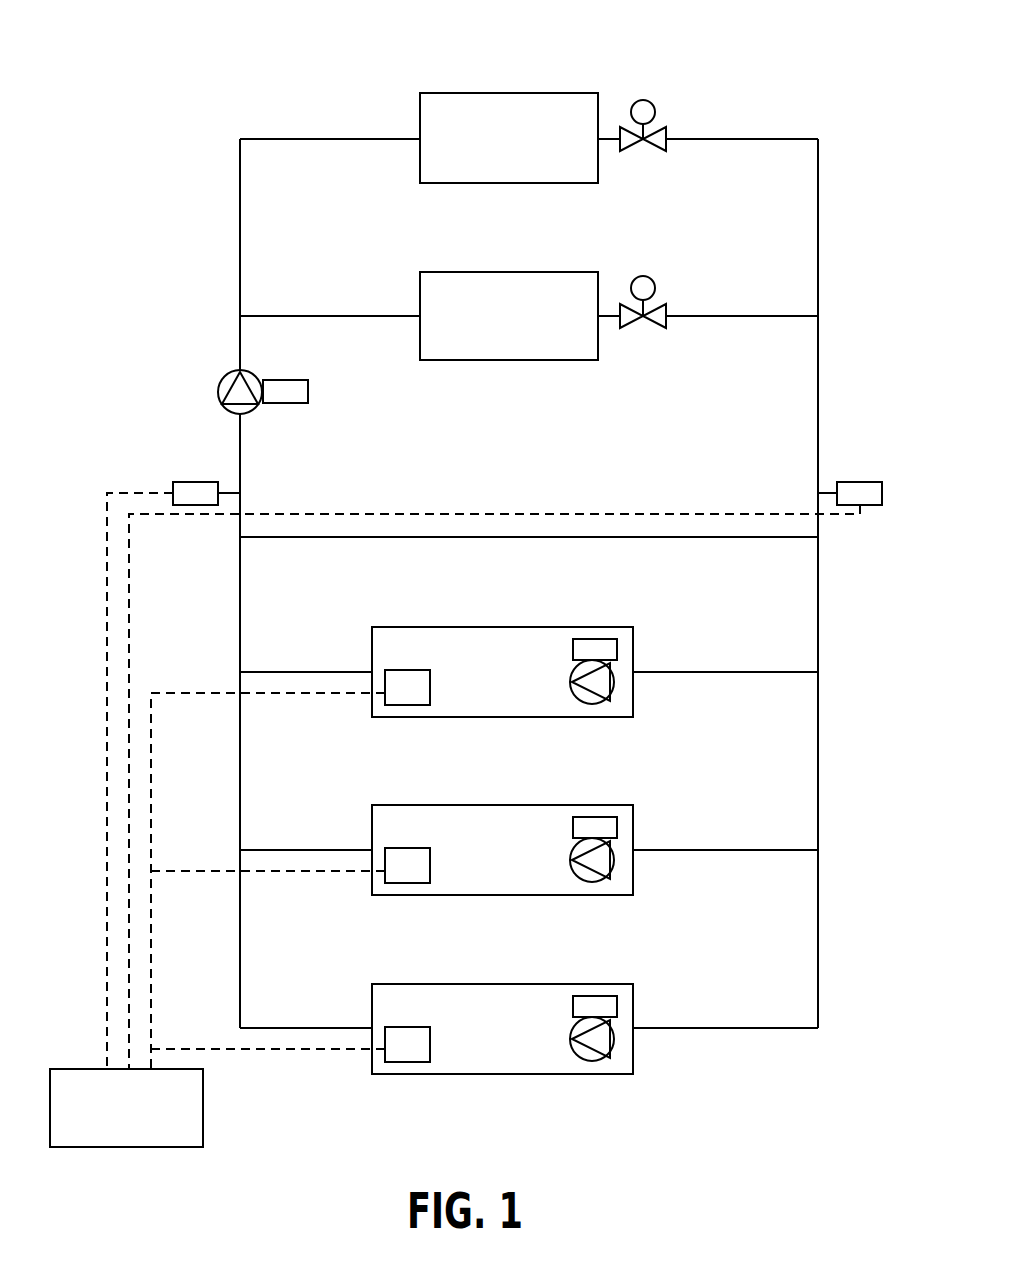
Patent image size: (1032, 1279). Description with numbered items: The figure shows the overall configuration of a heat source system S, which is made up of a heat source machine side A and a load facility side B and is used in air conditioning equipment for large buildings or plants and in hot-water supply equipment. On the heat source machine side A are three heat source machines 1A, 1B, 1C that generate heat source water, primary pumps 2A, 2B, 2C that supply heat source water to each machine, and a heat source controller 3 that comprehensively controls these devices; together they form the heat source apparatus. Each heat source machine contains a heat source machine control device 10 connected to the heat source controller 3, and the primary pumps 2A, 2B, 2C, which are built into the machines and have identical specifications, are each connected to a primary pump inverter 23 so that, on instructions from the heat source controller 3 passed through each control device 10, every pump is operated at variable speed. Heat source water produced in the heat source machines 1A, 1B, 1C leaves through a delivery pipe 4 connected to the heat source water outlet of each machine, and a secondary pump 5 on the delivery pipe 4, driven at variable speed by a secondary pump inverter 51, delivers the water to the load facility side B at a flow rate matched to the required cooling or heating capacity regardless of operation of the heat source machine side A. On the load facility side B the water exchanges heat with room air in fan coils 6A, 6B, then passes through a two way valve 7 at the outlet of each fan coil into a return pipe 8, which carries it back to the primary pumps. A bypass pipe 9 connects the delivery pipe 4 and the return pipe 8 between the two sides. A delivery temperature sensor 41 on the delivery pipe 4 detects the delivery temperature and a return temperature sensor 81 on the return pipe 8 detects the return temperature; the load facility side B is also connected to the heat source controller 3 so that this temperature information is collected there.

The heat source system S is at (763, 78).
The heat source machine side A is at (845, 780).
The load facility side B is at (845, 205).
The heat source machine 1A is at (385, 627).
The heat source machine 1B is at (385, 805).
The heat source machine 1C is at (385, 984).
The heat source machine control device 10 is at (420, 670).
The primary pump 2A is at (611, 682).
The primary pump 2B is at (611, 860).
The primary pump 2C is at (611, 1039).
The primary pump inverter 23 is at (594, 639).
The heat source controller 3 is at (203, 1110).
The delivery pipe 4 is at (238, 435).
The delivery temperature sensor 41 is at (195, 482).
The secondary pump 5 is at (218, 392).
The secondary pump inverter 51 is at (308, 392).
The fan coil 6A is at (572, 93).
The fan coil 6B is at (572, 272).
The two way valve 7 is at (643, 100).
The return pipe 8 is at (820, 385).
The return temperature sensor 81 is at (860, 482).
The bypass pipe 9 is at (745, 537).